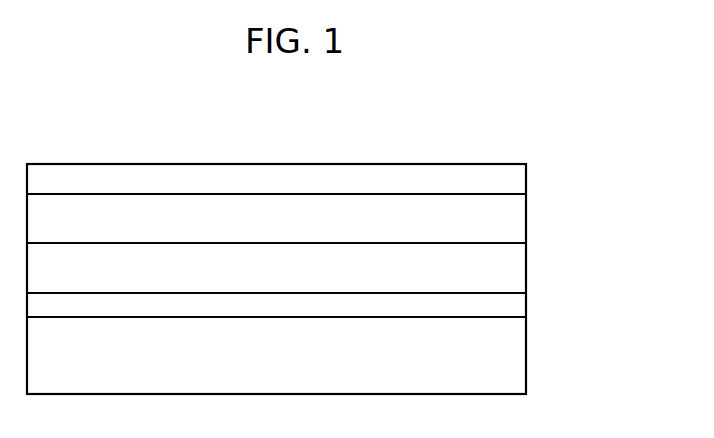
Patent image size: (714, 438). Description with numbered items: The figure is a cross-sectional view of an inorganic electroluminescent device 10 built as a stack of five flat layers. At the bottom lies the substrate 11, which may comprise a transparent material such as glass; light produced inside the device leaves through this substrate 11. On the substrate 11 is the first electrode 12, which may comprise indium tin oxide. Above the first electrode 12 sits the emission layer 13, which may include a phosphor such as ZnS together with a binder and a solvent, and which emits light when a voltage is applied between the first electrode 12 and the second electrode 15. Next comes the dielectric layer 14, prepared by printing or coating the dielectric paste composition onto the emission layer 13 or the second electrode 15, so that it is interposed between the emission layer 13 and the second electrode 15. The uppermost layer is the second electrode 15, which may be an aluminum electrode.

The inorganic electroluminescent device 10 is at (518, 147).
The substrate 11 is at (523, 357).
The first electrode 12 is at (523, 305).
The emission layer 13 is at (523, 268).
The dielectric layer 14 is at (523, 218).
The second electrode 15 is at (523, 179).